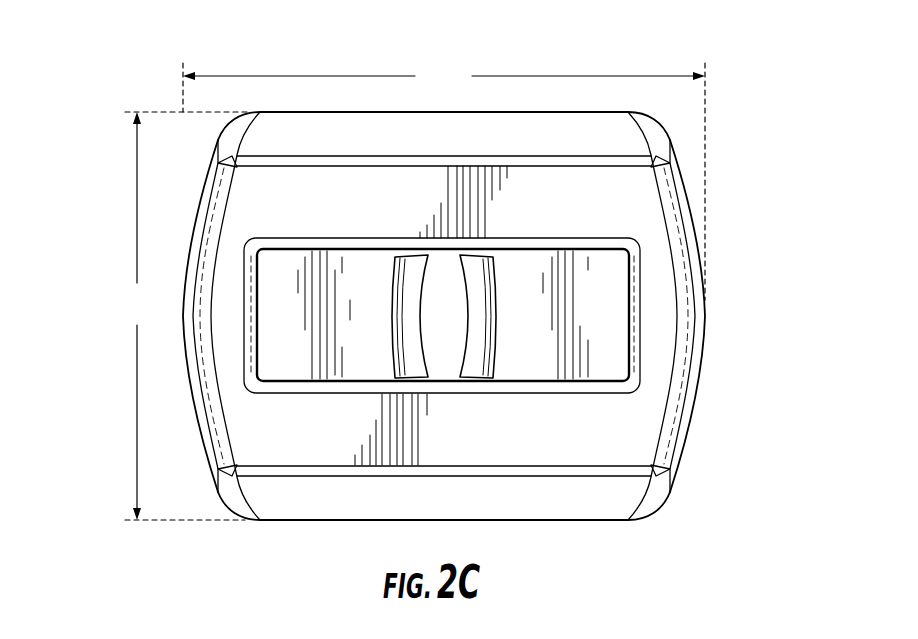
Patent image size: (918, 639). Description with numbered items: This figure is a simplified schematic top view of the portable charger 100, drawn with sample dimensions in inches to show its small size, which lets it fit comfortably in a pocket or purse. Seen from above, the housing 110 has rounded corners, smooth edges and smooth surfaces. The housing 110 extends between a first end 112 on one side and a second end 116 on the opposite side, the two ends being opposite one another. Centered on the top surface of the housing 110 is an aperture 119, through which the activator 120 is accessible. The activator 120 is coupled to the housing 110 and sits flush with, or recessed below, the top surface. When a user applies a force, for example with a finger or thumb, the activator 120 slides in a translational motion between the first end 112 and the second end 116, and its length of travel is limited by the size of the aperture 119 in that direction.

The portable charger 100 is at (138, 68).
The housing 110 is at (590, 508).
The first end 112 is at (693, 430).
The second end 116 is at (185, 357).
The aperture 119 is at (610, 343).
The activator 120 is at (500, 308).